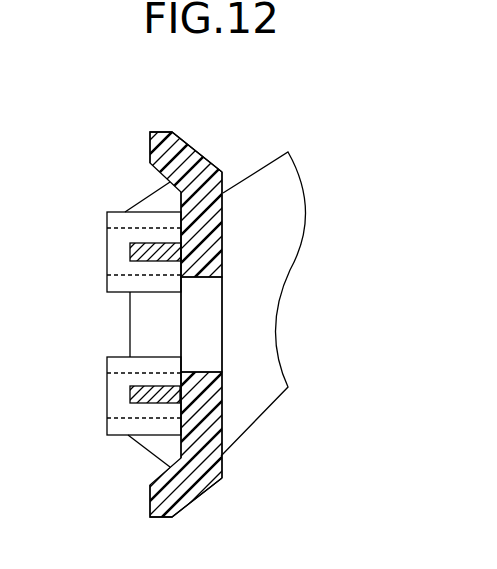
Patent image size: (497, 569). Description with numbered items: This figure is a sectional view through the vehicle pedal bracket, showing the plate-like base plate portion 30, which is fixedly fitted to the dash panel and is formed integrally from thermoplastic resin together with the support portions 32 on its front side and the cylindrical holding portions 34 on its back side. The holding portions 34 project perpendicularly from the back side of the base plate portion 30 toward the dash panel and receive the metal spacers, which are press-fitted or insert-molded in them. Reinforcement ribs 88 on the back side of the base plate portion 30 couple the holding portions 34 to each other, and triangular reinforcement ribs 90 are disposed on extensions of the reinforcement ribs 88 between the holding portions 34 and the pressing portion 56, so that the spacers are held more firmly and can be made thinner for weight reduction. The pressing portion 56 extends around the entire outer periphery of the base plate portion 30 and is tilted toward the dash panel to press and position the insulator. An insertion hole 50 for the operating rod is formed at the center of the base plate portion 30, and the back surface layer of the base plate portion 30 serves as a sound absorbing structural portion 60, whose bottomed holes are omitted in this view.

The base plate portion 30 is at (237, 129).
The support portion 32 is at (275, 247).
The holding portion 34 is at (125, 223).
The insertion hole 50 is at (207, 366).
The pressing portion 56 is at (178, 150).
The sound absorbing structural portion 60 is at (133, 148).
The reinforcement rib 88 is at (130, 247).
The triangular reinforcement rib 90 is at (158, 201).